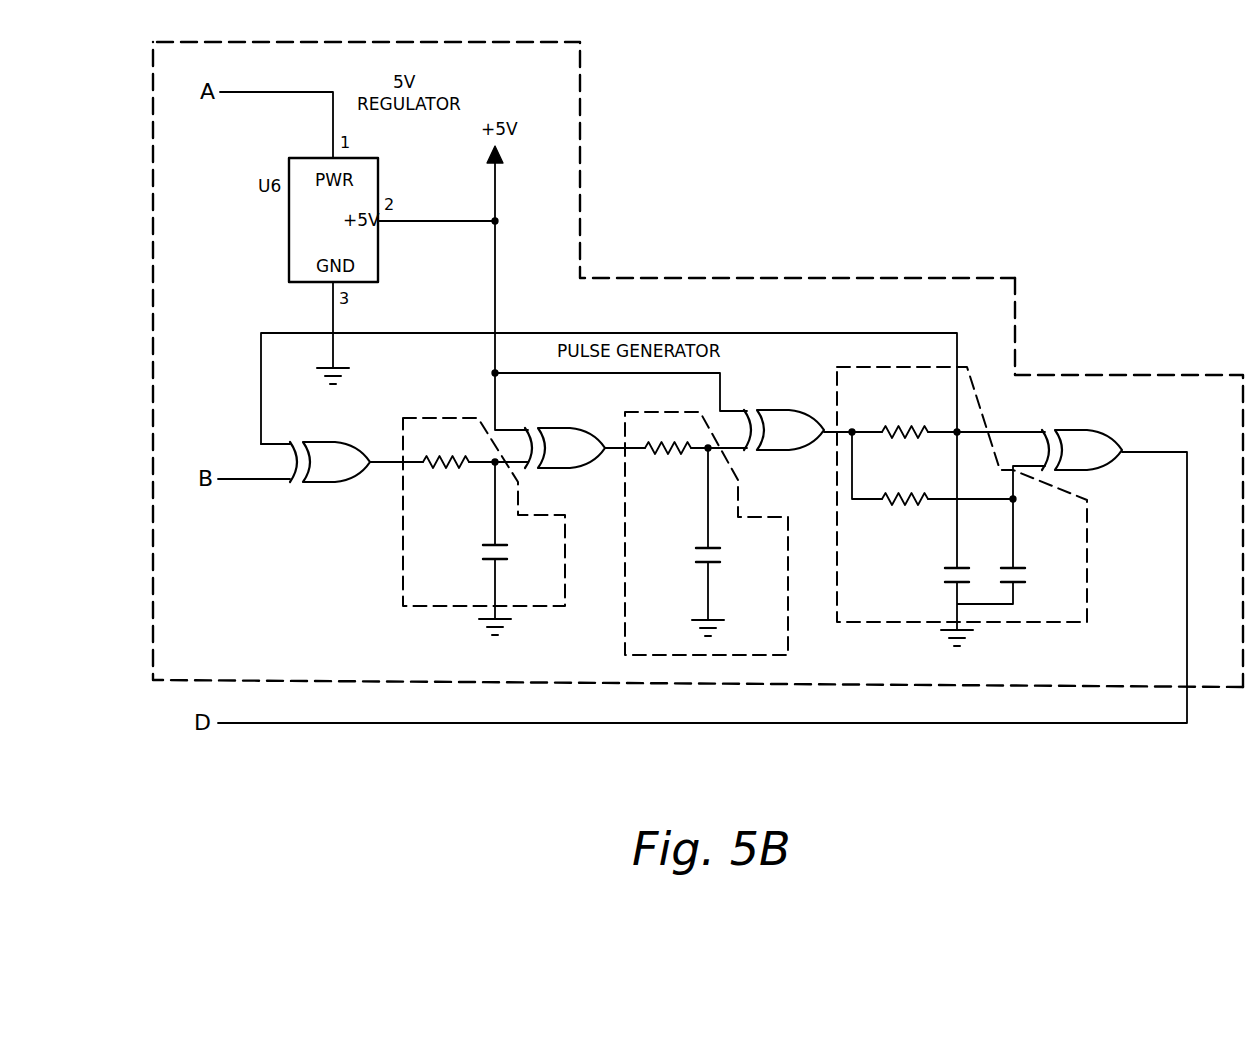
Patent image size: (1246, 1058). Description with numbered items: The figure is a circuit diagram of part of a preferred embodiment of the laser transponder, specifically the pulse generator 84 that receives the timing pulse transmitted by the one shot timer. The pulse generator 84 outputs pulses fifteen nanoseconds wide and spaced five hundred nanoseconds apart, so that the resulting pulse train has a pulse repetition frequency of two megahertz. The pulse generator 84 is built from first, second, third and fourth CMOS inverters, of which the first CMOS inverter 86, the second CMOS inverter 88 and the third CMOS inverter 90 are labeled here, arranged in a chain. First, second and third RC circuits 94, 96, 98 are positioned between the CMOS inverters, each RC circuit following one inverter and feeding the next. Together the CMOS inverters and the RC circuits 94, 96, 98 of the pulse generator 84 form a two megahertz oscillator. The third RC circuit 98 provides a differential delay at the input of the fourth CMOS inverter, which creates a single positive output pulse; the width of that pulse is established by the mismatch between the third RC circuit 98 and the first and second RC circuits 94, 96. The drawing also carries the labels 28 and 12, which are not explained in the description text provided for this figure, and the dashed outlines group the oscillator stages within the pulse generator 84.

The control circuit 28 is at (755, 217).
The pulse generator 84 is at (1115, 380).
The first CMOS inverter 86 is at (333, 484).
The second CMOS inverter 88 is at (576, 468).
The third CMOS inverter 90 is at (779, 410).
The fourth exclusive-OR gate U5D 12 is at (1097, 470).
The first RC circuit 94 is at (400, 562).
The second RC circuit 96 is at (790, 598).
The third RC circuit 98 is at (937, 362).